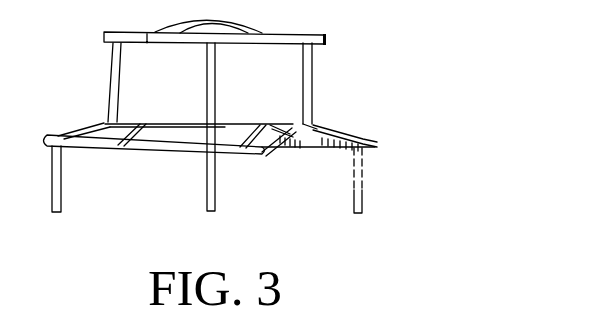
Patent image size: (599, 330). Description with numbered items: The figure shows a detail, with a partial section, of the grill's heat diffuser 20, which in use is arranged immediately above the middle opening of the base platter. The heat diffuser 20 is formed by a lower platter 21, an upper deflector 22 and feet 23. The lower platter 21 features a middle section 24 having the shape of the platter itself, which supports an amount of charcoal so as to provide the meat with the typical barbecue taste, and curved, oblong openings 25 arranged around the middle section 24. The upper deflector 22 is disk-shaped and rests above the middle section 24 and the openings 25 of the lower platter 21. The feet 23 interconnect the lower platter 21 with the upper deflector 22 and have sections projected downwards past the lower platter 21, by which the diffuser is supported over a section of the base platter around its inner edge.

The heat diffuser 20 is at (500, 43).
The lower platter 21 is at (375, 147).
The upper deflector 22 is at (325, 43).
The feet 23 is at (313, 66).
The middle section 24 is at (253, 125).
The curved, oblong openings 25 is at (316, 128).